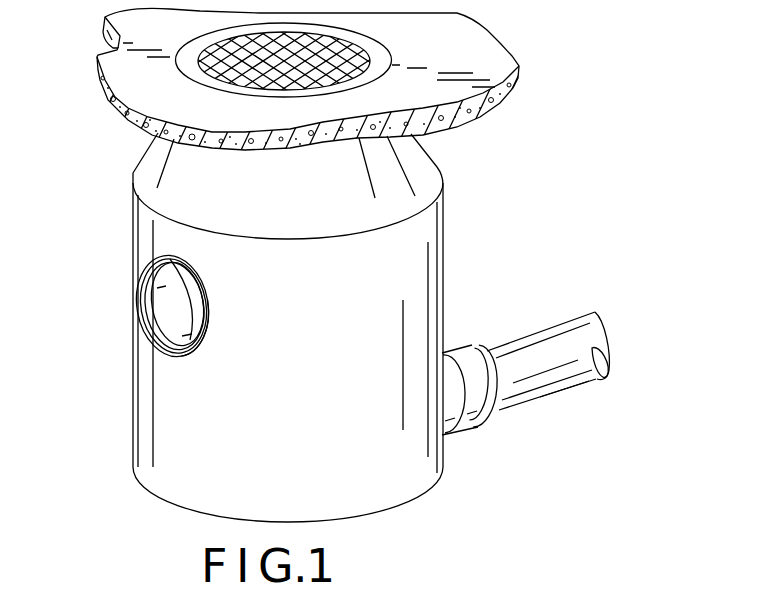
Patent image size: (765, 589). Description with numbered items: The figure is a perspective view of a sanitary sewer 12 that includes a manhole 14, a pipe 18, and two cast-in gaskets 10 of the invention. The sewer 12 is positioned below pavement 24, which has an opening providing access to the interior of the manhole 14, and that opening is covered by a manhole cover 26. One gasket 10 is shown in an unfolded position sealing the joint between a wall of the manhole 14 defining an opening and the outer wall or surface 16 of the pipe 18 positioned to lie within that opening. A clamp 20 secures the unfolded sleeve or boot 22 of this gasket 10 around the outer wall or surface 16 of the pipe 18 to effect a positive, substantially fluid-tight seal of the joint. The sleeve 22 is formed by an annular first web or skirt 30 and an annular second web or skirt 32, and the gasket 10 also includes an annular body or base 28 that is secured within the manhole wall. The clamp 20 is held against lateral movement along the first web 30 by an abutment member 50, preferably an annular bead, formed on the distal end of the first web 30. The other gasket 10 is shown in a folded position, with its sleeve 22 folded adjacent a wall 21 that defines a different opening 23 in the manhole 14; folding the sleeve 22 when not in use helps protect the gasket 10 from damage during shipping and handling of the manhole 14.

The gasket 10 is at (146, 318).
The sanitary sewer 12 is at (468, 239).
The manhole 14 is at (222, 452).
The outer wall or surface 16 is at (566, 324).
The pipe 18 is at (586, 342).
The clamp 20 is at (497, 413).
The wall 21 is at (138, 302).
The sleeve or boot 22 is at (459, 366).
The opening 23 is at (158, 275).
The pavement 24 is at (519, 63).
The manhole cover 26 is at (363, 37).
The annular body or base 28 is at (186, 359).
The first web or skirt 30 is at (479, 423).
The second web or skirt 32 is at (170, 326).
The abutment member 50 is at (489, 366).